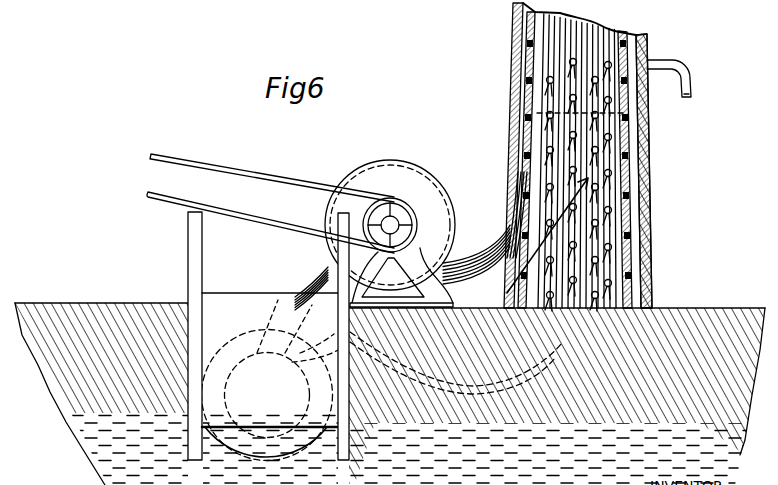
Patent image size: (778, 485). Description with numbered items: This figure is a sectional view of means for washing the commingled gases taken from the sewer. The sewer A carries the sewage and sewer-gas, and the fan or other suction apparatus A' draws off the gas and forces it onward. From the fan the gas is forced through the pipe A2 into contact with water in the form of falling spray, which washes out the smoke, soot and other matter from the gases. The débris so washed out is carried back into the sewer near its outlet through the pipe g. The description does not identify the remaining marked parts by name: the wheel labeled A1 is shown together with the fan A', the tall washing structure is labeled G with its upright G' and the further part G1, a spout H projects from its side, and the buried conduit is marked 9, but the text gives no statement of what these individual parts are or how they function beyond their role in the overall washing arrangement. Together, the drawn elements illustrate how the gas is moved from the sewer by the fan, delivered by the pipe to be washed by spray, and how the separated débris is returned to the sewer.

The sewer A is at (270, 380).
The fan or other suction apparatus A' is at (390, 310).
The upper wheel A1 is at (452, 212).
The rope bundle A2 is at (318, 292).
The wall G is at (588, 157).
The wall upright G' is at (651, 169).
The wall upright G1 is at (630, 204).
The spout H is at (690, 63).
The pipe g is at (461, 363).
The rope conduit 9 is at (461, 363).